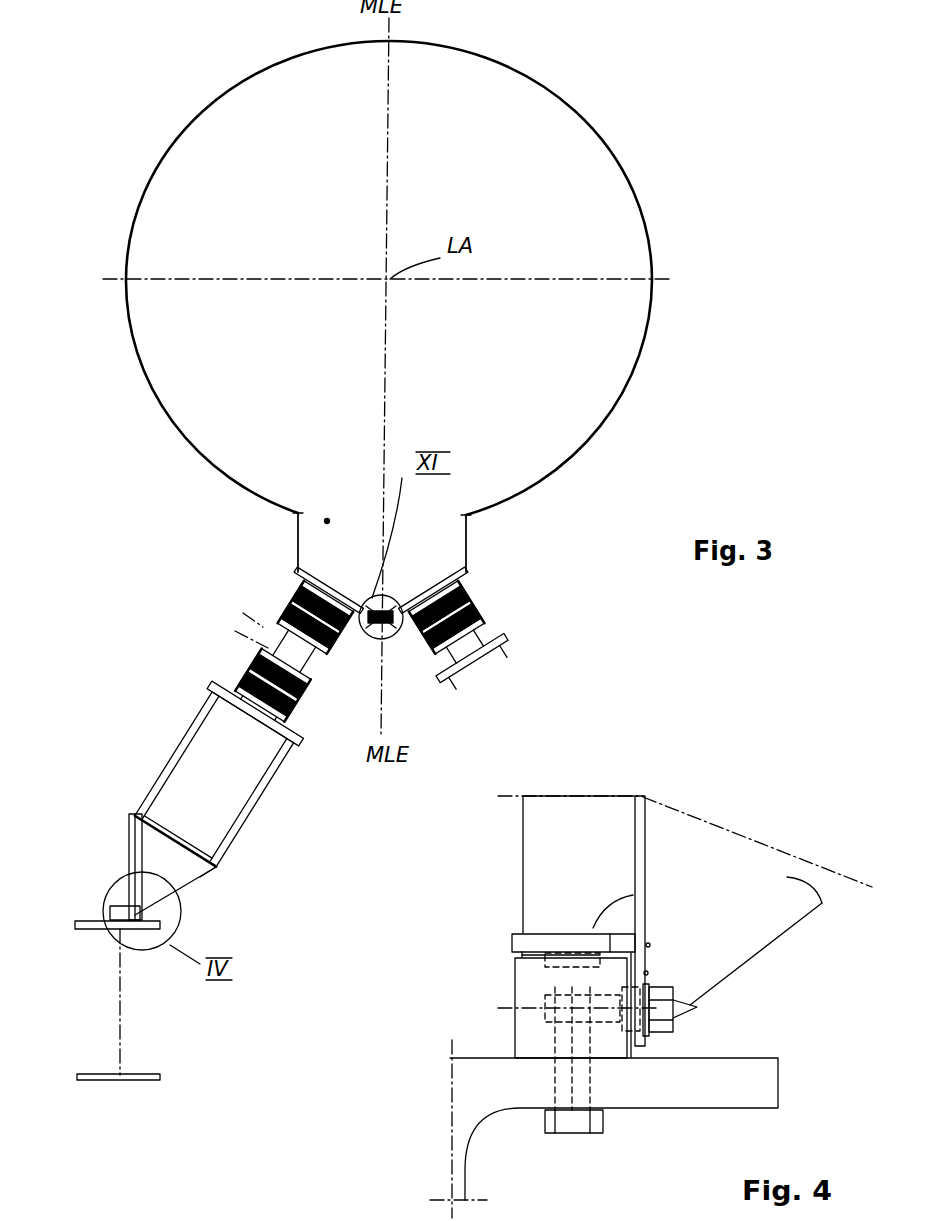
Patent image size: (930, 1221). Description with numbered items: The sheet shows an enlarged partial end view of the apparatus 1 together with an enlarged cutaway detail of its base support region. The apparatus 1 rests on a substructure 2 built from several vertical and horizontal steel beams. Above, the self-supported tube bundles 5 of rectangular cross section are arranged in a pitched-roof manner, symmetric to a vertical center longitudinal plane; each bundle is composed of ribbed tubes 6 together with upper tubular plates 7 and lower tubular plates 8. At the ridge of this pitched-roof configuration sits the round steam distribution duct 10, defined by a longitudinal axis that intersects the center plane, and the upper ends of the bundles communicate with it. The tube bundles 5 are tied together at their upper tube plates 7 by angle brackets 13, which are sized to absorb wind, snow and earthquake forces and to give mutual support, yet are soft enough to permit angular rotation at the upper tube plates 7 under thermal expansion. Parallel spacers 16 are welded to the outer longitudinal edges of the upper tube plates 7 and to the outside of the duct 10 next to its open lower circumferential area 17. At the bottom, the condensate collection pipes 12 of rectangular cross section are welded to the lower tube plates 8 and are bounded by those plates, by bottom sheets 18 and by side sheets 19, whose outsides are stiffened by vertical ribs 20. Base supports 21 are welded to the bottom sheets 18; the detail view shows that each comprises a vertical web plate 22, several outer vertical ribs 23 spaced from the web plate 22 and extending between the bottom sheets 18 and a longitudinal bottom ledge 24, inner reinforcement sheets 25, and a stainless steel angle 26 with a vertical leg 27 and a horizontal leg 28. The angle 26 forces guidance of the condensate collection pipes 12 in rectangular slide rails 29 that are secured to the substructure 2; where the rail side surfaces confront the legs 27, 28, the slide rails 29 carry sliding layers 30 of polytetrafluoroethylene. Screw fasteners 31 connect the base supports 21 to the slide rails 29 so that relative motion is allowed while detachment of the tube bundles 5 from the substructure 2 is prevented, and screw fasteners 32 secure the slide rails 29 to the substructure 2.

In FIG. 3, the apparatus 1 is at (707, 295).
In FIG. 3, the substructure 2 is at (118, 1090).
In FIG. 4, the substructure 2 is at (462, 1096).
In FIG. 3, the tube bundles 5 is at (278, 616).
In FIG. 3, the ribbed tubes 6 is at (288, 578).
In FIG. 3, the upper tubular plates 7 is at (342, 577).
In FIG. 3, the lower tubular plates 8 is at (245, 662).
In FIG. 3, the steam distribution duct 10 is at (633, 186).
In FIG. 3, the condensate collection pipes 12 is at (200, 768).
In FIG. 3, the angle brackets 13 is at (375, 641).
In FIG. 3, the spacers 16 is at (296, 530).
In FIG. 3, the open lower circumferential area 17 is at (327, 521).
In FIG. 3, the bottom sheets 18 is at (143, 827).
In FIG. 3, the side sheets 19 is at (203, 725).
In FIG. 3, the vertical ribs 20 is at (200, 740).
In FIG. 3, the base supports 21 is at (201, 888).
In FIG. 4, the base supports 21 is at (783, 945).
In FIG. 3, the vertical web plate 22 is at (129, 850).
In FIG. 4, the vertical web plate 22 is at (640, 827).
In FIG. 3, the outer vertical ribs 23 is at (130, 827).
In FIG. 4, the outer vertical ribs 23 is at (565, 821).
In FIG. 4, the longitudinal bottom ledge 24 is at (547, 933).
In FIG. 3, the inner reinforcement sheets 25 is at (180, 863).
In FIG. 4, the inner reinforcement sheets 25 is at (822, 903).
In FIG. 4, the stainless steel angle 26 is at (652, 942).
In FIG. 4, the vertical leg 27 is at (647, 972).
In FIG. 4, the horizontal leg 28 is at (597, 933).
In FIG. 3, the slide rails 29 is at (118, 908).
In FIG. 4, the slide rails 29 is at (540, 976).
In FIG. 4, the sliding layers 30 is at (547, 944).
In FIG. 4, the screw fasteners 31 is at (663, 1002).
In FIG. 4, the screw fasteners 32 is at (568, 1123).